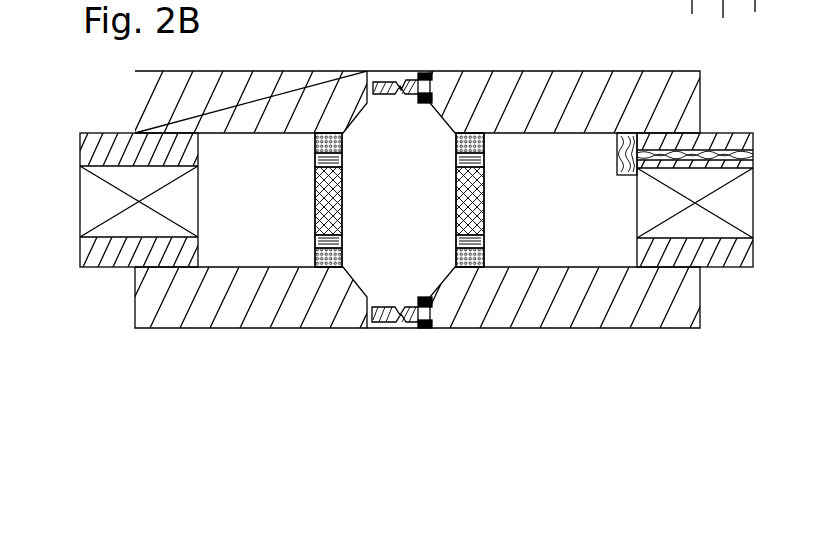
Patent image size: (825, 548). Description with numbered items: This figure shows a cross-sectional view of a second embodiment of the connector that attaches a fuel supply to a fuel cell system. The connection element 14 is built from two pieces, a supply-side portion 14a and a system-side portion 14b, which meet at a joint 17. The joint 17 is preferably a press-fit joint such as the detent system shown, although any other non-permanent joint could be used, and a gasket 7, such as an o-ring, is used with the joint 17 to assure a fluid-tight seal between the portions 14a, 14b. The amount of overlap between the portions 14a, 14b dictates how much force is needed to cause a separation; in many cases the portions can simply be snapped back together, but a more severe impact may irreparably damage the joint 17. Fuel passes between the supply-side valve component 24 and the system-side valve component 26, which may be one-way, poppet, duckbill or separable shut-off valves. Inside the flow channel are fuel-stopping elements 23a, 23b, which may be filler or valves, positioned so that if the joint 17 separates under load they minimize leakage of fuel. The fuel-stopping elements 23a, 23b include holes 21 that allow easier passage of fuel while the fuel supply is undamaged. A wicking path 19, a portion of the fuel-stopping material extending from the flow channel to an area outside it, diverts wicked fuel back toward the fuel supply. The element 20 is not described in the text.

The connection element 14 is at (499, 46).
The supply-side portion 14a is at (617, 320).
The system-side portion 14b is at (233, 322).
The joint 17 is at (400, 72).
The gasket 7 is at (425, 103).
The holes 21 is at (315, 163).
The fuel-stopping element 23a is at (315, 208).
The fuel-stopping element 23b is at (484, 207).
The wicking path 19 is at (753, 153).
The supply-side valve component 24 is at (722, 270).
The system-side valve component 26 is at (92, 268).
The connection 20 is at (723, 34).